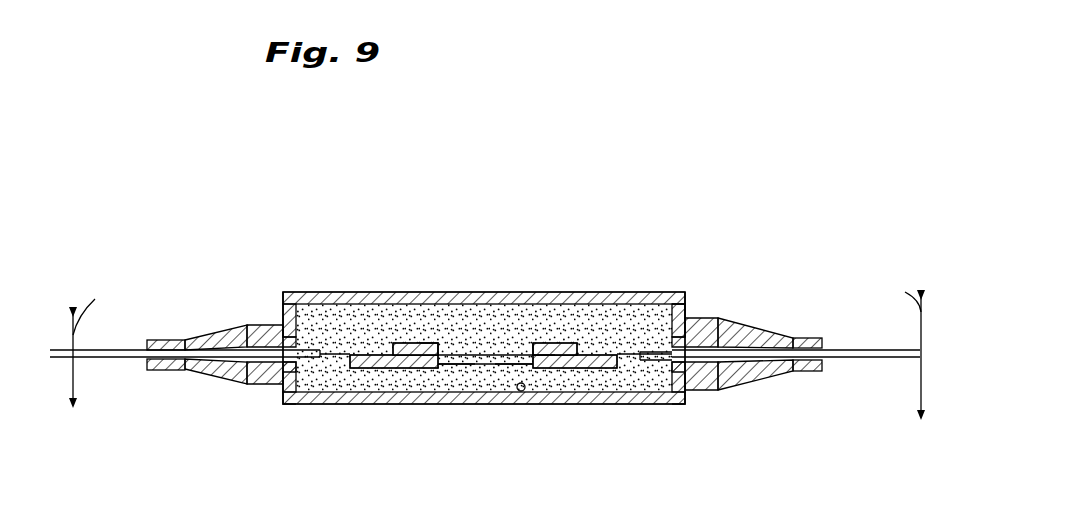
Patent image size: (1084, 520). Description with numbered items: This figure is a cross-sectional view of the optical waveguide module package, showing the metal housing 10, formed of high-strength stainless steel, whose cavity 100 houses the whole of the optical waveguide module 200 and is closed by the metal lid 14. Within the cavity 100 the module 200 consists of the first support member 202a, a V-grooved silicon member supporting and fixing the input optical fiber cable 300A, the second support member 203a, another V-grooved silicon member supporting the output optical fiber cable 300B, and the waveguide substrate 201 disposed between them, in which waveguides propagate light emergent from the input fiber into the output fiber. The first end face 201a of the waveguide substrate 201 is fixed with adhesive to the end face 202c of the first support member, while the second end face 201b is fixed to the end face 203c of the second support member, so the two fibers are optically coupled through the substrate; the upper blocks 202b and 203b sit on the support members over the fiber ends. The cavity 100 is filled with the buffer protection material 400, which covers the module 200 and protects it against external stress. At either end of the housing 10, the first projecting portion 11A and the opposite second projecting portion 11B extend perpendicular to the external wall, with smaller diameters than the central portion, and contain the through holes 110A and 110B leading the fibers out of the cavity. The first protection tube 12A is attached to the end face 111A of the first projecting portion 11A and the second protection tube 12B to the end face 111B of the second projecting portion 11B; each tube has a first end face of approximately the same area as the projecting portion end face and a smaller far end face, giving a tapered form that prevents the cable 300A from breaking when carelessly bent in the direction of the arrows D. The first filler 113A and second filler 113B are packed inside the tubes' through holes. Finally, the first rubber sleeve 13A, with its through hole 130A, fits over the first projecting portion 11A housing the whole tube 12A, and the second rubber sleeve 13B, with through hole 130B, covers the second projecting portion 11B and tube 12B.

The metal housing 10 is at (466, 405).
The metal lid 14 is at (687, 302).
The cavity 100 is at (524, 391).
The through hole 110A is at (318, 413).
The through hole 110B is at (690, 404).
The first projecting portion 11A is at (257, 325).
The second projecting portion 11B is at (703, 325).
The first protection tube 12A is at (212, 337).
The second protection tube 12B is at (752, 332).
The first rubber sleeve 13A is at (163, 340).
The second rubber sleeve 13B is at (810, 340).
The end face of first projecting portion 111A is at (243, 383).
The end face of second projecting portion 111B is at (745, 384).
The first filler 113A is at (268, 386).
The second filler 113B is at (710, 391).
The through hole 130A is at (150, 372).
The through hole 130B is at (808, 373).
The optical waveguide module 200 is at (658, 201).
The waveguide substrate 201 is at (500, 355).
The first end face of waveguide substrate 201a is at (470, 354).
The second end face of waveguide substrate 201b is at (527, 355).
The first support member 202a is at (357, 355).
The left fixing block 202b is at (410, 344).
The end face of first support member 202c is at (421, 349).
The second support member 203a is at (598, 360).
The right fixing block 203b is at (600, 345).
The end face of second support member 203c is at (570, 352).
The input optical fiber cable 300A is at (105, 358).
The output optical fiber cable 300B is at (882, 358).
The buffer protection material 400 is at (303, 301).
The arrows D is at (497, 340).